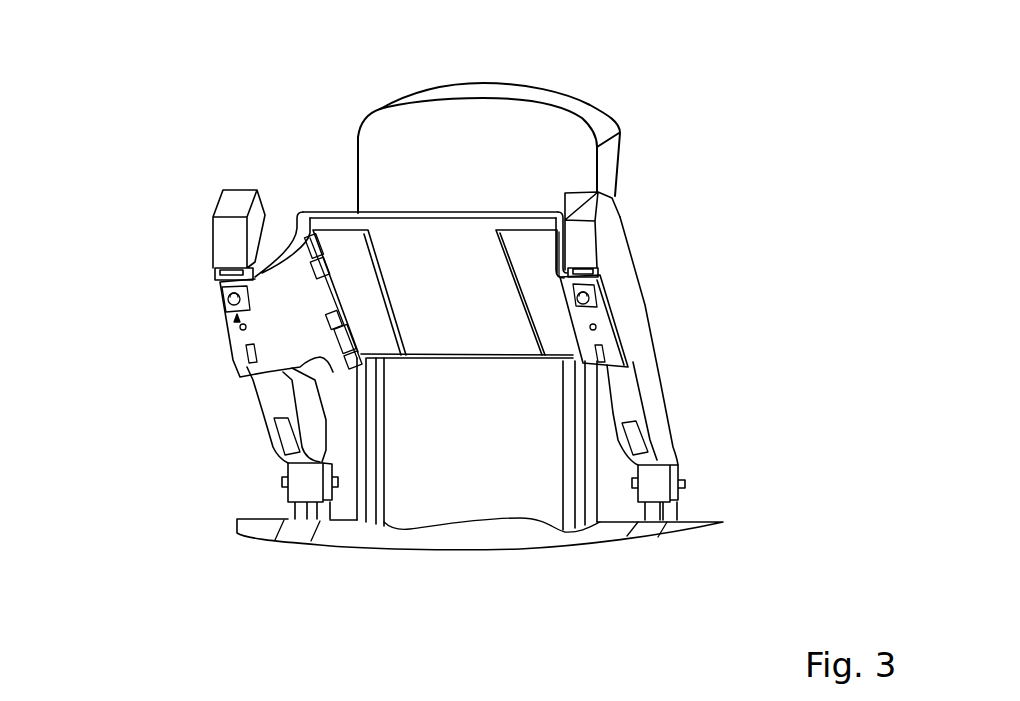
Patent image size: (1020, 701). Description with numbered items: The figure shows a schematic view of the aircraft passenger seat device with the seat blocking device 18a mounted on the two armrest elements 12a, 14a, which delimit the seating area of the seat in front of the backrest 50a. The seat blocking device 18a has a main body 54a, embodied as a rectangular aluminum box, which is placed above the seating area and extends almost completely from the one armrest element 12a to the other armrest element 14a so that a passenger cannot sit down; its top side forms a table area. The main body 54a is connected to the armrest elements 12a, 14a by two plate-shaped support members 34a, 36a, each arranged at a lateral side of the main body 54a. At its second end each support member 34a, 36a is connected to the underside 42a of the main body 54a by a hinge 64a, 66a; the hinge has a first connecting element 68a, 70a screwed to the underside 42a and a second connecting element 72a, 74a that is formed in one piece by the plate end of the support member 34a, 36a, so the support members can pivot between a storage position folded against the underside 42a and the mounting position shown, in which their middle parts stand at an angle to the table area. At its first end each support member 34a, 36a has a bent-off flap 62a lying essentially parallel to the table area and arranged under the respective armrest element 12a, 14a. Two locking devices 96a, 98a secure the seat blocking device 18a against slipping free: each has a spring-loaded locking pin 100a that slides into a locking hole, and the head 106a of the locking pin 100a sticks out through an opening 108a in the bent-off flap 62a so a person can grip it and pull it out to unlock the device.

The armrest element 12a is at (228, 230).
The armrest element 14a is at (565, 285).
The seat blocking device 18a is at (457, 203).
The support member 34a is at (336, 378).
The support member 36a is at (528, 407).
The underside 42a is at (427, 325).
The backrest 50a is at (483, 418).
The main body 54a is at (467, 240).
The bent-off flap 62a is at (258, 350).
The hinge 64a is at (300, 209).
The hinge 66a is at (545, 219).
The first connecting element 68a is at (350, 247).
The first connecting element 70a is at (537, 252).
The second connecting element 72a is at (308, 252).
The second connecting element 74a is at (588, 252).
The locking device 96a is at (228, 320).
The locking device 98a is at (632, 290).
The locking pin 100a is at (228, 298).
The head 106a is at (228, 300).
The opening 108a is at (230, 310).